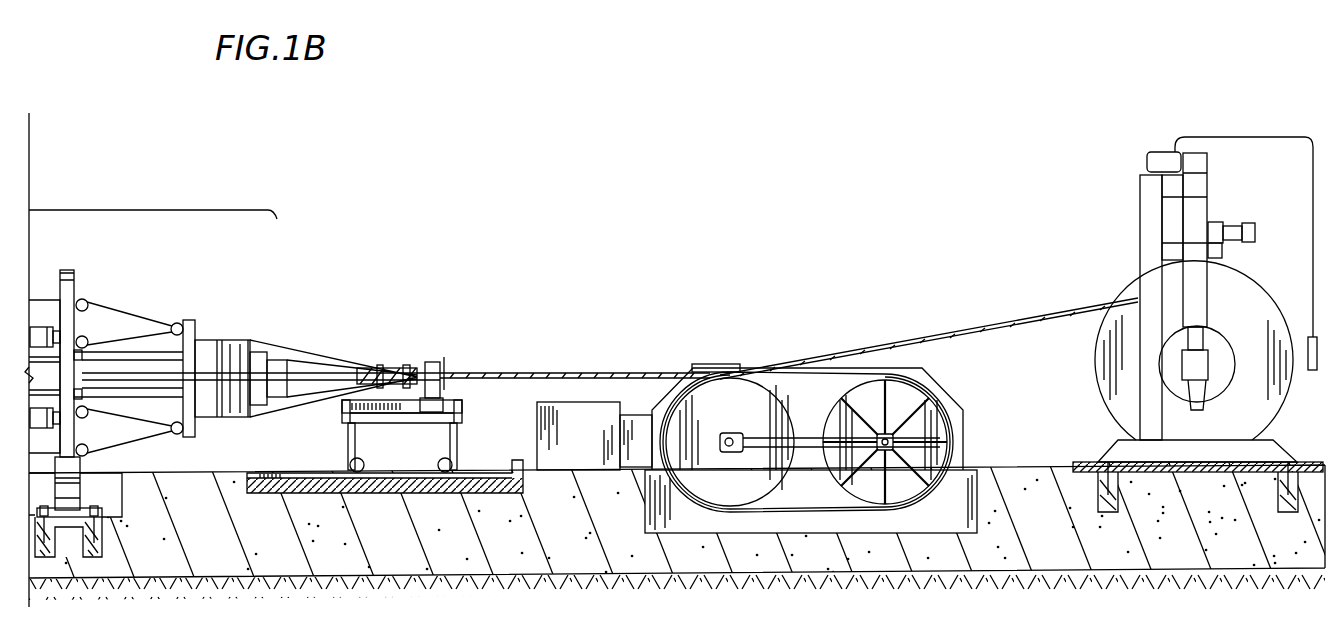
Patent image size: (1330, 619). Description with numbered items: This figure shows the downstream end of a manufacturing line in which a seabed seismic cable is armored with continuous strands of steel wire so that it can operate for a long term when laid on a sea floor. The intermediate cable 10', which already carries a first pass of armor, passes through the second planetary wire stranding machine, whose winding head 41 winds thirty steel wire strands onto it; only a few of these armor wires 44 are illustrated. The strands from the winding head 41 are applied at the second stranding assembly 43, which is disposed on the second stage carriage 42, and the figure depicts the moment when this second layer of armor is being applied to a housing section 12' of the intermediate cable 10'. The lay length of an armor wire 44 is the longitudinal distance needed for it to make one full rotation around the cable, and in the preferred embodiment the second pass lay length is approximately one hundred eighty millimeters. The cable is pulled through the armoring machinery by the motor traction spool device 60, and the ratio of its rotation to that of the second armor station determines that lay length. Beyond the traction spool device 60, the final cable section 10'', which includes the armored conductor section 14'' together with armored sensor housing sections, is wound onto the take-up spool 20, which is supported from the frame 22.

The armor wire 44 is at (108, 302).
The winding head 41 is at (264, 314).
The intermediate cable 10' is at (261, 340).
The housing section 12' is at (387, 344).
The second stranding assembly 43 is at (432, 362).
The second stage carriage 42 is at (473, 394).
The final cable section 10'' is at (789, 329).
The armored conductor section 14'' is at (594, 396).
The motor traction spool 60 is at (789, 338).
The frame 22 is at (1140, 210).
The take-up spool 20 is at (1274, 295).